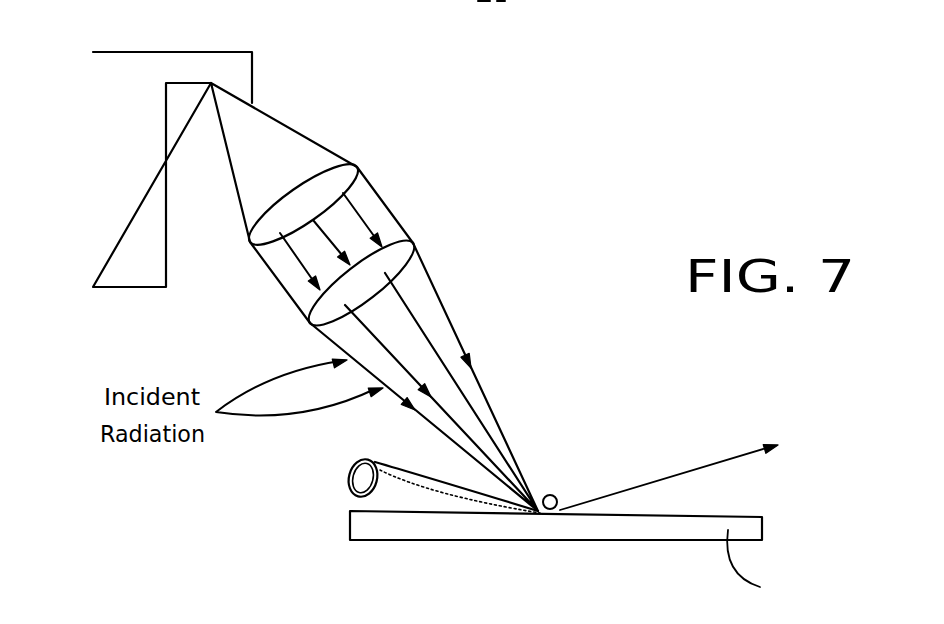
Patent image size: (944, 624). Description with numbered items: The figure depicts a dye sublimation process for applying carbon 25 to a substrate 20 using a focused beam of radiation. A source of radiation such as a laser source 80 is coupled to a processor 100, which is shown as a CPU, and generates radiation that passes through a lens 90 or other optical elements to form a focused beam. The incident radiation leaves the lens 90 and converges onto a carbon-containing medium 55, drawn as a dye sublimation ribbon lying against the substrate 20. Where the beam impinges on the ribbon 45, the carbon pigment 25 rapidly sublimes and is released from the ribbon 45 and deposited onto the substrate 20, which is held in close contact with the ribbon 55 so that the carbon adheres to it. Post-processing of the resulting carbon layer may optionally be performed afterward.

The processor 100 is at (84, 137).
The laser source 80 is at (306, 134).
The lens 90 is at (420, 236).
The ribbon 45 is at (700, 465).
The carbon-containing medium 55 is at (338, 481).
The carbon 25 is at (425, 490).
The substrate 20 is at (582, 540).